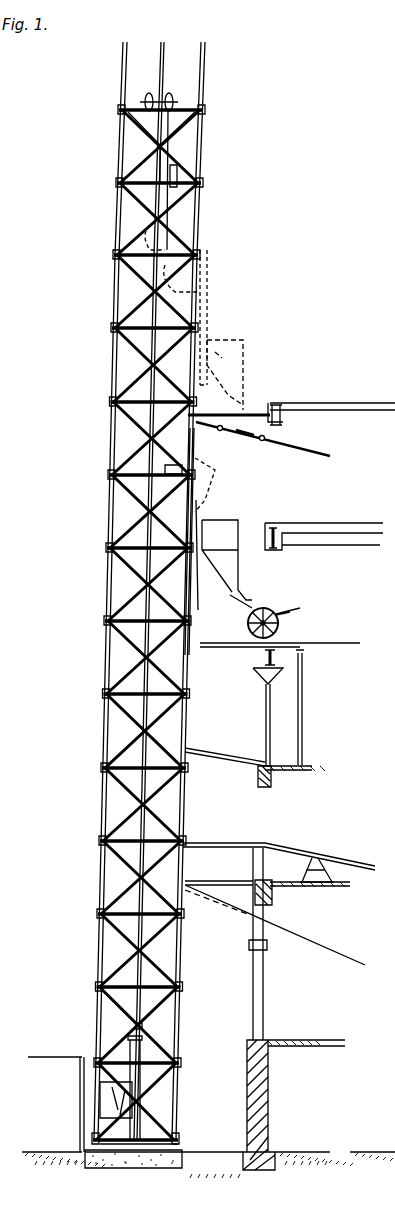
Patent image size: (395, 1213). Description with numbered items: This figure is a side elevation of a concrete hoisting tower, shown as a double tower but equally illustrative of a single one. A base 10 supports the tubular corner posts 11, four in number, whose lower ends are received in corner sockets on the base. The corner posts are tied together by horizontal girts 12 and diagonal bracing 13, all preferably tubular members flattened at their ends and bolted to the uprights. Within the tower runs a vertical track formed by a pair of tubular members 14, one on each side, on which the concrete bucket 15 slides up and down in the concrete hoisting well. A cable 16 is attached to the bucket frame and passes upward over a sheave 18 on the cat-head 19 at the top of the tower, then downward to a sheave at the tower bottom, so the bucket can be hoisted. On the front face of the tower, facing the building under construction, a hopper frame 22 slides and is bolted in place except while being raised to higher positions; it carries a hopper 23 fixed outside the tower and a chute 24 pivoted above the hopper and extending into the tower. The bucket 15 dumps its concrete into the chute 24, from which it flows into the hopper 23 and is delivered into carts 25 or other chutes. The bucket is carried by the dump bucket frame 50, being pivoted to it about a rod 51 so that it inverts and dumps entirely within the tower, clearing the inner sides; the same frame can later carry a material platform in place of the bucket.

The base 10 is at (173, 1150).
The tubular corner posts 11 is at (184, 808).
The horizontal girts 12 is at (160, 1003).
The diagonal bracing 13 is at (130, 1040).
The tubular track members 14 is at (103, 896).
The concrete bucket 15 is at (168, 240).
The cable 16 is at (173, 181).
The sheave 18 is at (170, 98).
The cat-head 19 is at (187, 118).
The hopper frame 22 is at (196, 598).
The hopper 23 is at (245, 346).
The chute 24 is at (210, 305).
The carts 25 is at (272, 612).
The dump bucket frame 50 is at (140, 1055).
The rod 51 is at (128, 1122).